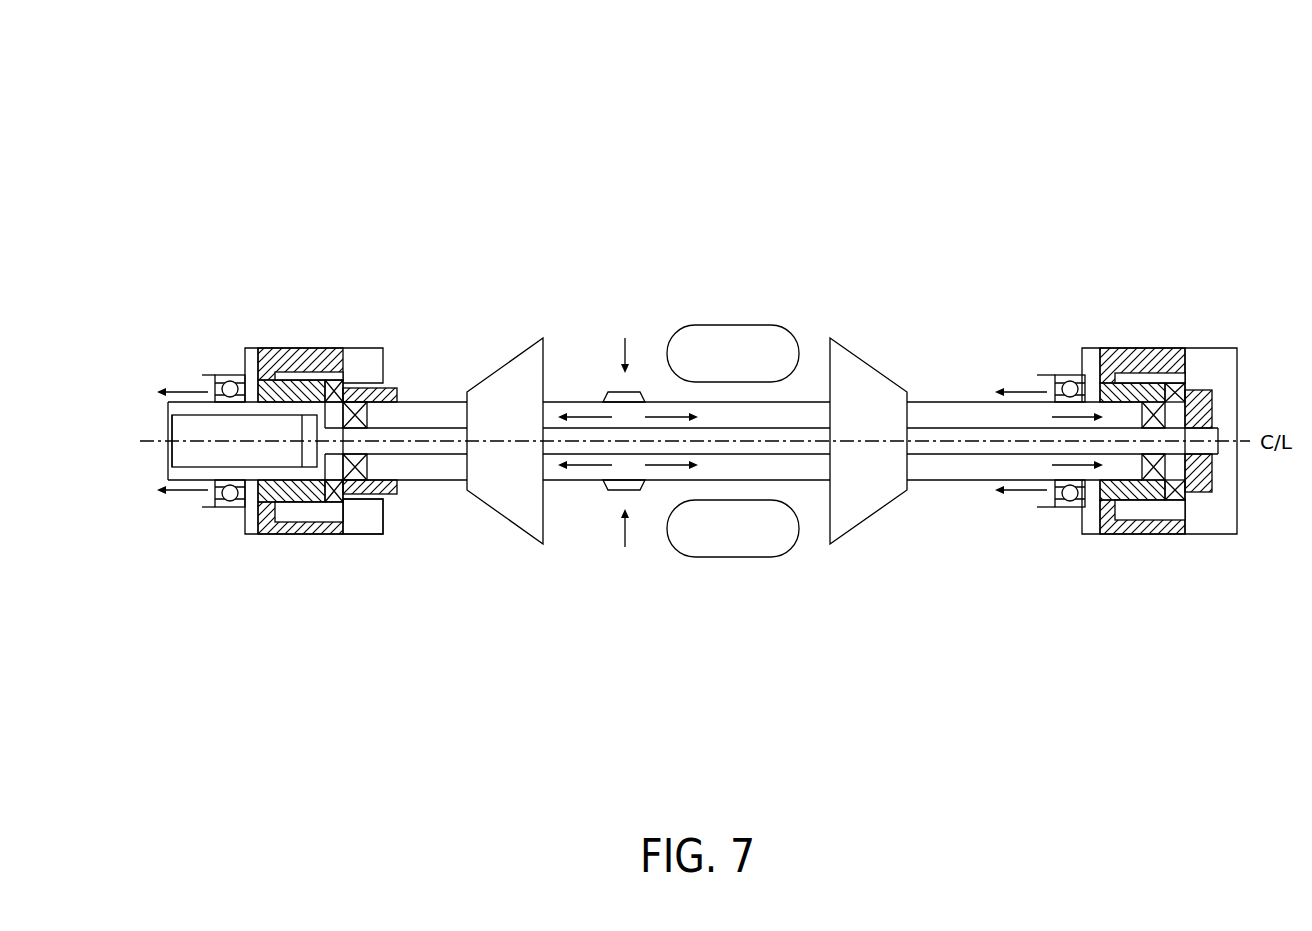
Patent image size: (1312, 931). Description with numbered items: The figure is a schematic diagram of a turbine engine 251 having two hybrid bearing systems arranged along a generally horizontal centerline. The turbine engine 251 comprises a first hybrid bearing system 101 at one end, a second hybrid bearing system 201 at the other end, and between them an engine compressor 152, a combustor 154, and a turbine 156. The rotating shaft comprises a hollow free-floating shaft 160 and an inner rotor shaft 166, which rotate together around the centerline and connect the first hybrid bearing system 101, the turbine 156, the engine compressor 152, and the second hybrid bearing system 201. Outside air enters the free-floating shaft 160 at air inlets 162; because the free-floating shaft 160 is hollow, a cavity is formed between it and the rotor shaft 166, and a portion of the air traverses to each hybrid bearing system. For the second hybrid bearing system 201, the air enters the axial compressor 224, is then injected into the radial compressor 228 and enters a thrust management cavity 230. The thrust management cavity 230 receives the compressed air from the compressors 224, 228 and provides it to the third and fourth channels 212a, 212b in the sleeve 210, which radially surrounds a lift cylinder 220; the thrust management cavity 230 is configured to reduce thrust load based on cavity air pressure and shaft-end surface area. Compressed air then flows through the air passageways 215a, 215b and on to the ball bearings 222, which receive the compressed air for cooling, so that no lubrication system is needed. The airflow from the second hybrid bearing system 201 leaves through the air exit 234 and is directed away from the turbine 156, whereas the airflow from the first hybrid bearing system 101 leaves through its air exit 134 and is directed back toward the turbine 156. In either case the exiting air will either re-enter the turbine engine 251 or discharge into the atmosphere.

The turbine engine 251 is at (260, 99).
The second hybrid bearing system 201 is at (314, 263).
The first hybrid bearing system 101 is at (1130, 261).
The ball bearings 222 is at (247, 368).
The air exit 234 is at (205, 378).
The air passageway 215a is at (306, 348).
The third channel 212a is at (338, 370).
The radial compressor 228 is at (350, 368).
The axial compressor 224 is at (385, 487).
The lift cylinder 220 is at (250, 520).
The sleeve 210 is at (267, 535).
The air passageway 215b is at (305, 505).
The fourth channel 212b is at (317, 512).
The thrust management cavity 230 is at (373, 522).
The engine compressor 152 is at (513, 533).
The air inlets 162 is at (617, 387).
The combustor 154 is at (733, 572).
The turbine 156 is at (872, 528).
The free-floating shaft 160 is at (943, 399).
The air exit 134 is at (1045, 383).
The rotor shaft 166 is at (982, 462).